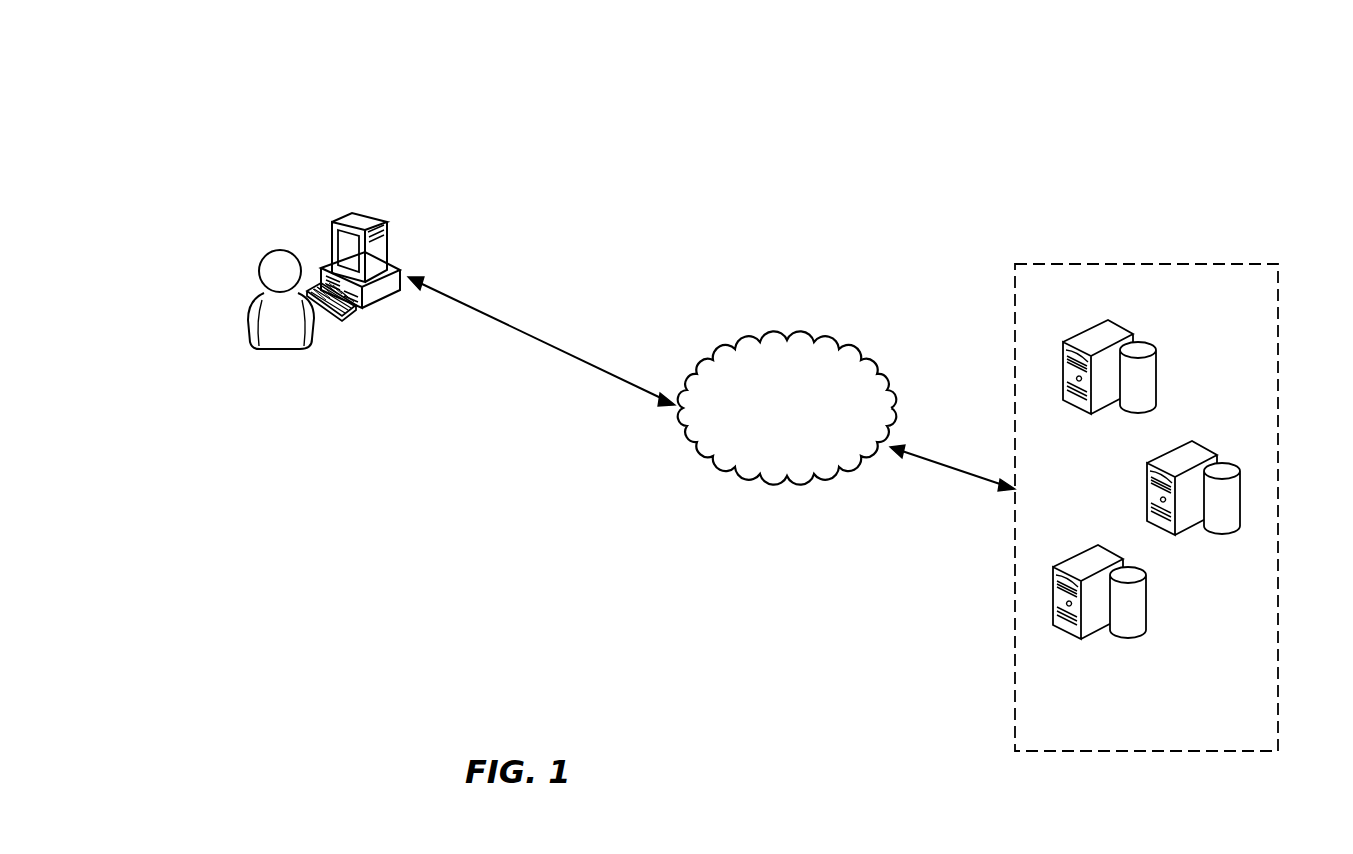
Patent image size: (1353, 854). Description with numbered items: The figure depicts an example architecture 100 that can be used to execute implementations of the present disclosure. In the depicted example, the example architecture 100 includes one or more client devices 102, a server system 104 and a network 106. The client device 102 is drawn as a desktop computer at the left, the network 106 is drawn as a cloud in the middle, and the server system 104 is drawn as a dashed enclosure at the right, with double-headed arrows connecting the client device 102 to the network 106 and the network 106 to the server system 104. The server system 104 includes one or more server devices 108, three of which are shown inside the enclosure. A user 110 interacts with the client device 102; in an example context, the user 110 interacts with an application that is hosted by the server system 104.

The example architecture 100 is at (638, 96).
The client device 102 is at (330, 226).
The server system 104 is at (1144, 264).
The network 106 is at (790, 333).
The server device 108 is at (1157, 355).
The user 110 is at (284, 348).